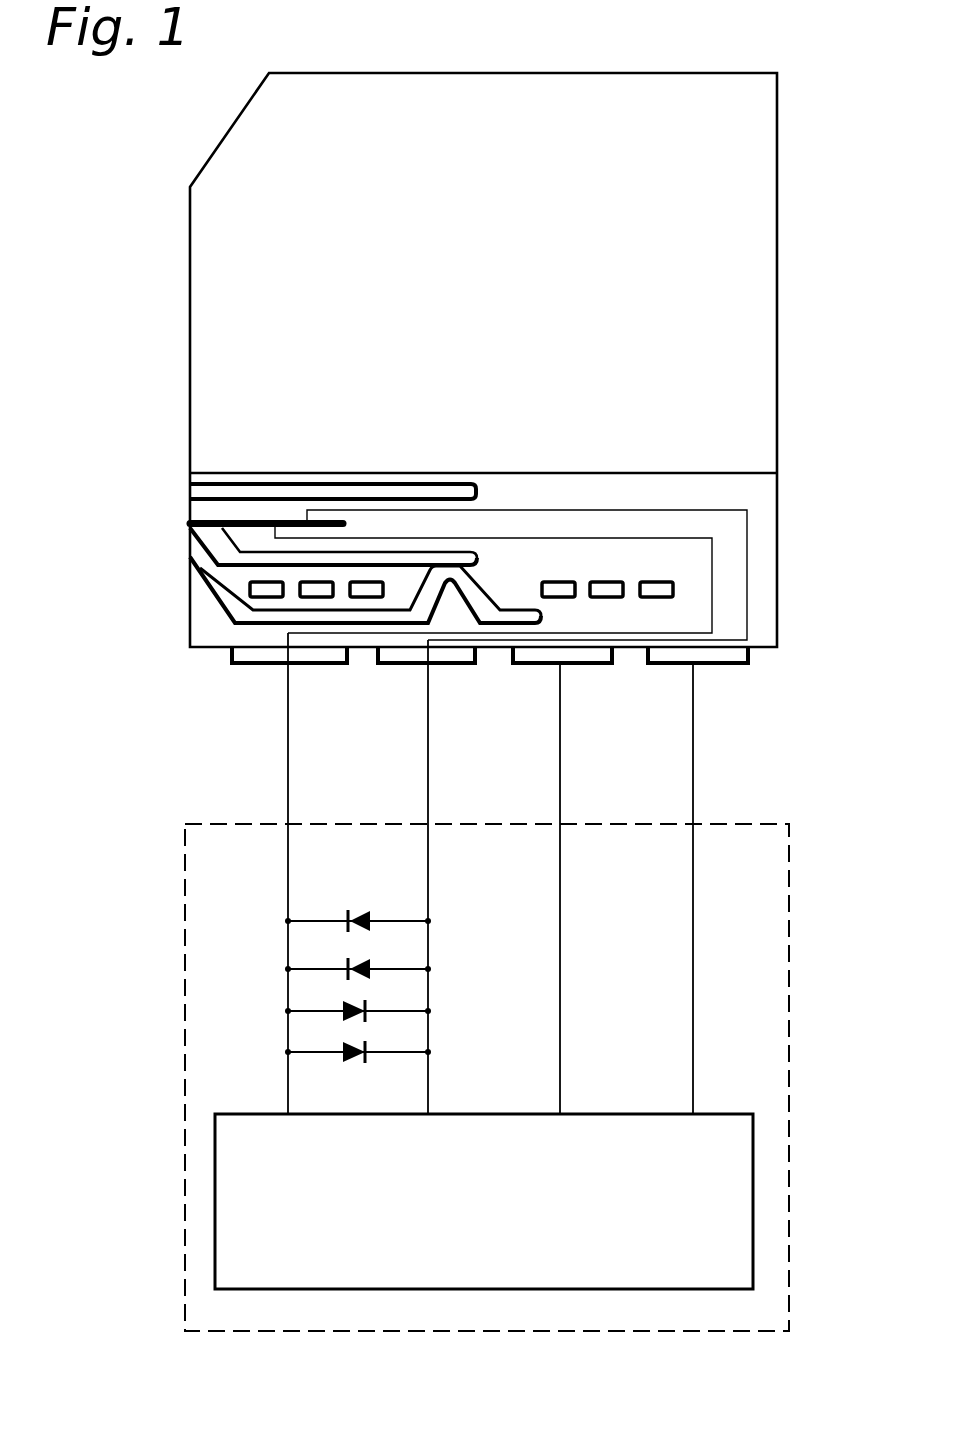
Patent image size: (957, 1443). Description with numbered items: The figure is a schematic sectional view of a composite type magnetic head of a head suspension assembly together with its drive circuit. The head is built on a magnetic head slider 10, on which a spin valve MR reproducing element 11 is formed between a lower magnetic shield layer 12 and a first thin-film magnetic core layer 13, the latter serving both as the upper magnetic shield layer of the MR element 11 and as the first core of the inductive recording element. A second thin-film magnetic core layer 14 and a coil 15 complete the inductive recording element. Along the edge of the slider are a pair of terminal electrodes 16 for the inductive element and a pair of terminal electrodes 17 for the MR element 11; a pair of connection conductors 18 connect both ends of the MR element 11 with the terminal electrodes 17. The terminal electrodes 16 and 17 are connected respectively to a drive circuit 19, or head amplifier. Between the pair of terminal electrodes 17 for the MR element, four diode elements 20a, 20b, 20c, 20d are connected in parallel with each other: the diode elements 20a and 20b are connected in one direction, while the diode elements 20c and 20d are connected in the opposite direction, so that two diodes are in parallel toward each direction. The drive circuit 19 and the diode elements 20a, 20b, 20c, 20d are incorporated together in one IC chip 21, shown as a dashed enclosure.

The magnetic head slider 10 is at (748, 197).
The spin valve MR reproducing element 11 is at (203, 521).
The lower magnetic shield layer 12 is at (203, 491).
The first thin-film magnetic core layer 13 is at (203, 545).
The second thin-film magnetic core layer 14 is at (210, 588).
The coil 15 is at (273, 584).
The pair of terminal electrodes for the inductive element 16 is at (573, 655).
The pair of terminal electrodes for the MR element 17 is at (243, 655).
The pair of connection conductors 18 is at (712, 573).
The drive circuit 19 is at (713, 1113).
The diode element 20a is at (358, 913).
The diode element 20b is at (360, 962).
The diode element 20c is at (348, 1003).
The diode element 20d is at (345, 1047).
The IC chip 21 is at (790, 927).